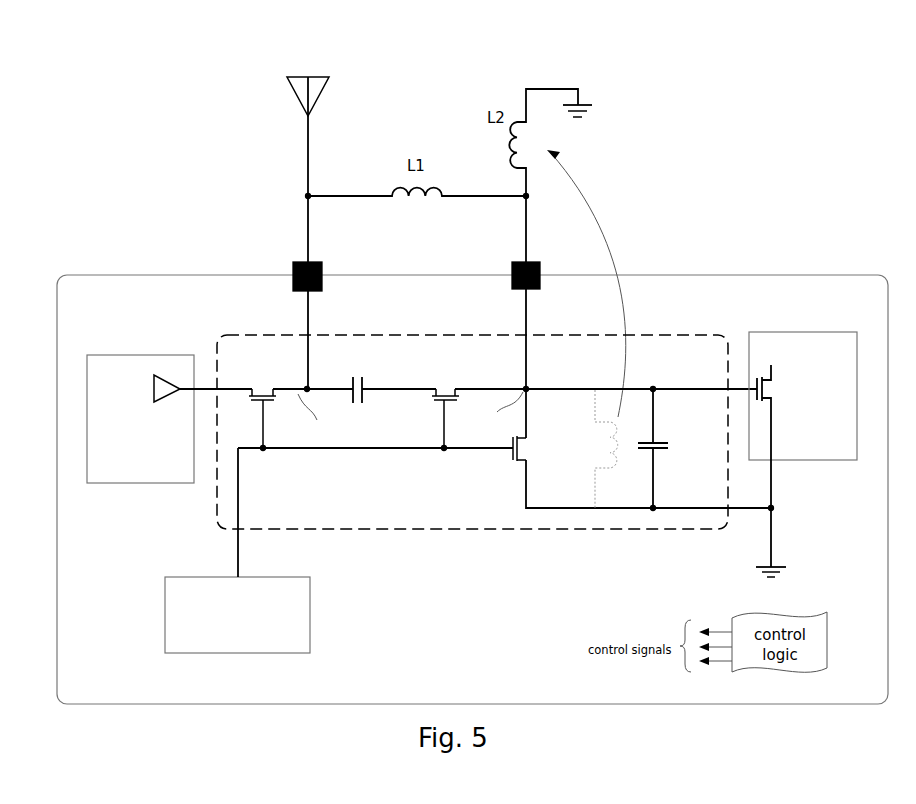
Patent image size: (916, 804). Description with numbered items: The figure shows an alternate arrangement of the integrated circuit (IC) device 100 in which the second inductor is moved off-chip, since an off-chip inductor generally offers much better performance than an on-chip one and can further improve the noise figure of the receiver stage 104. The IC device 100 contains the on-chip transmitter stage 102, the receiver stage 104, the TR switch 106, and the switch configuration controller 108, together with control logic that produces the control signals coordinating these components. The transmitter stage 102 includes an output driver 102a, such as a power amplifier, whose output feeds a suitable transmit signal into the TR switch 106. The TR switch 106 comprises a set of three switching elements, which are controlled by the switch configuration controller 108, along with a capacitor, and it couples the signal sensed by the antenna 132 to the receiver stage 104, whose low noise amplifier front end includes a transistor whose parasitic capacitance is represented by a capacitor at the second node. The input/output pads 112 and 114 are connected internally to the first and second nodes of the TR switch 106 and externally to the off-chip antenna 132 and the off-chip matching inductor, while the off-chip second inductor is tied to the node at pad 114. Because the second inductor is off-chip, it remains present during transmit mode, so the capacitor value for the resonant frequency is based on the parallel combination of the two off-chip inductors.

The integrated circuit (IC) device 100 is at (725, 275).
The transmitter stage 102 is at (140, 446).
The output driver 102a is at (167, 402).
The receiver stage 104 is at (803, 460).
The TR switch 106 is at (440, 529).
The switch configuration controller 108 is at (310, 637).
The pad 112 is at (298, 260).
The pad 114 is at (520, 260).
The antenna 132 is at (318, 104).